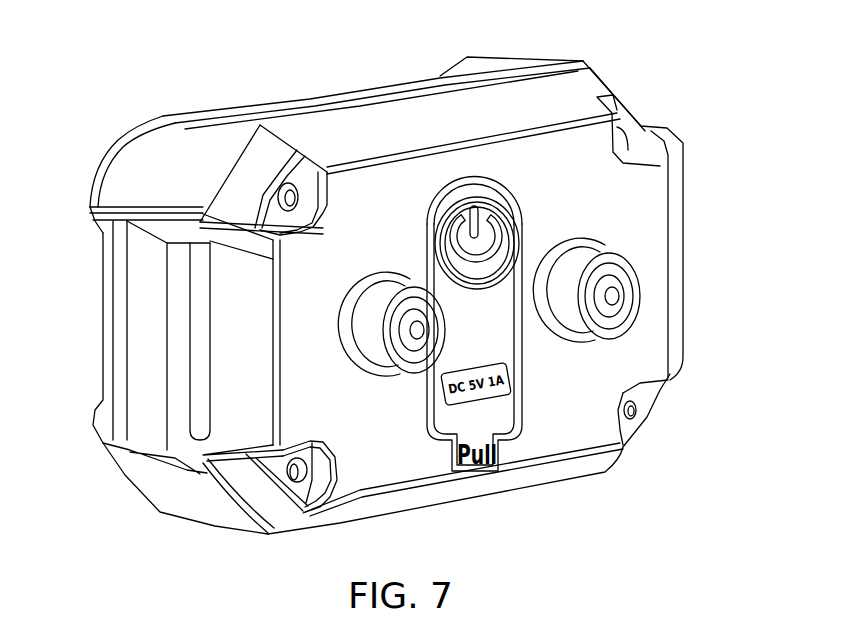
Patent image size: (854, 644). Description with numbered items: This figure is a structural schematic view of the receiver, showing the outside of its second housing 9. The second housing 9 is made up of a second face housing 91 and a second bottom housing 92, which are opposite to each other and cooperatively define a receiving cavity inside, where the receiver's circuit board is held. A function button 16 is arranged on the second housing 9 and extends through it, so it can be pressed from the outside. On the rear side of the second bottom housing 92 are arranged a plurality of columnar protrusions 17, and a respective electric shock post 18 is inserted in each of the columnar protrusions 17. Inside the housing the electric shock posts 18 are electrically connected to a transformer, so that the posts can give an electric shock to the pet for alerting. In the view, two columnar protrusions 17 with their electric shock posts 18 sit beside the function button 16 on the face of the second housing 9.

The second housing 9 is at (100, 19).
The second face housing 91 is at (162, 160).
The second bottom housing 92 is at (243, 163).
The function button 16 is at (466, 208).
The columnar protrusions 17 is at (568, 262).
The electric shock posts 18 is at (617, 299).